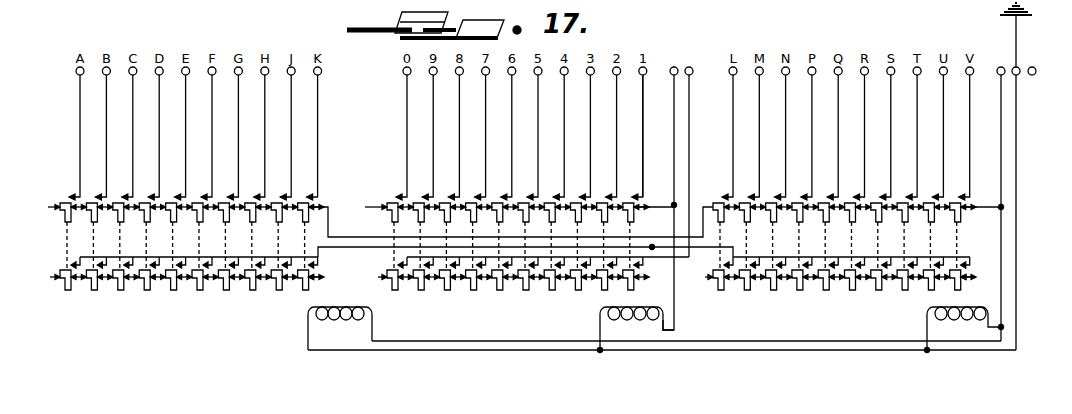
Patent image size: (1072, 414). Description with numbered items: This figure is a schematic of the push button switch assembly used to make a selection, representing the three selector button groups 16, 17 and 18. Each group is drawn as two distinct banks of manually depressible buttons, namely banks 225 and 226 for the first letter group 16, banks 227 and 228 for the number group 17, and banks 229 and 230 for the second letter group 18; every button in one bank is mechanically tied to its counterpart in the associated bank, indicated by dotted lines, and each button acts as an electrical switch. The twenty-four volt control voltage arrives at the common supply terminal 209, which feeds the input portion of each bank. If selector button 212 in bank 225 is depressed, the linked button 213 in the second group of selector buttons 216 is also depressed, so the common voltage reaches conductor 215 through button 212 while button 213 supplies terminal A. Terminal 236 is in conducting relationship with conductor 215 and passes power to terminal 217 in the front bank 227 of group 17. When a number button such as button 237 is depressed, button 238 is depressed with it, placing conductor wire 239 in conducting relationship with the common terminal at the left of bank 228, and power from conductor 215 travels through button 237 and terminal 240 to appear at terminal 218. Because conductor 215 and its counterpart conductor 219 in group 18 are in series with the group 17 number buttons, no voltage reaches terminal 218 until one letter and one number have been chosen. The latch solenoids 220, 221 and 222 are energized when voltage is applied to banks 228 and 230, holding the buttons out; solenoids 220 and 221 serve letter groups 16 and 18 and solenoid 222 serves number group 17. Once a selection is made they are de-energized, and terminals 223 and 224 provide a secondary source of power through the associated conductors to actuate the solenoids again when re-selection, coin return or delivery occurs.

The selector button group 16 is at (171, 200).
The selector button group 17 is at (538, 196).
The selector button group 18 is at (848, 196).
The supply terminal 209 is at (50, 207).
The selector button 212 is at (62, 291).
The selector button 213 is at (58, 218).
The conductor 215 is at (254, 257).
The second group of selector buttons 216 is at (171, 168).
The conductor 217 is at (648, 280).
The terminal 218 is at (690, 66).
The conductor 219 is at (950, 264).
The selector button latch solenoid 220 is at (372, 307).
The selector button latch solenoid 221 is at (930, 306).
The selector button latch solenoid 222 is at (602, 308).
The terminal 223 is at (1001, 66).
The terminal 224 is at (672, 66).
The bank of selector buttons 225 is at (173, 295).
The bank of selector buttons 226 is at (330, 191).
The bank of selector buttons 227 is at (546, 289).
The bank of selector buttons 228 is at (518, 168).
The bank of selector buttons 229 is at (776, 292).
The bank of selector buttons 230 is at (720, 190).
The terminal 236 is at (652, 248).
The selector button 237 is at (627, 292).
The selector button 238 is at (626, 212).
The conductor wire 239 is at (646, 121).
The terminal 240 is at (637, 265).